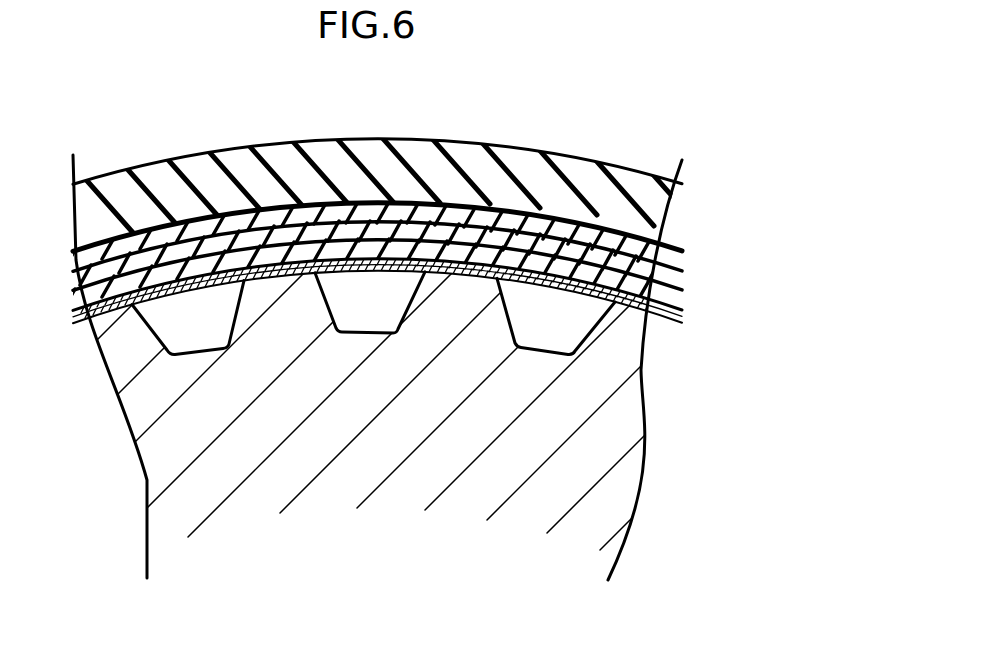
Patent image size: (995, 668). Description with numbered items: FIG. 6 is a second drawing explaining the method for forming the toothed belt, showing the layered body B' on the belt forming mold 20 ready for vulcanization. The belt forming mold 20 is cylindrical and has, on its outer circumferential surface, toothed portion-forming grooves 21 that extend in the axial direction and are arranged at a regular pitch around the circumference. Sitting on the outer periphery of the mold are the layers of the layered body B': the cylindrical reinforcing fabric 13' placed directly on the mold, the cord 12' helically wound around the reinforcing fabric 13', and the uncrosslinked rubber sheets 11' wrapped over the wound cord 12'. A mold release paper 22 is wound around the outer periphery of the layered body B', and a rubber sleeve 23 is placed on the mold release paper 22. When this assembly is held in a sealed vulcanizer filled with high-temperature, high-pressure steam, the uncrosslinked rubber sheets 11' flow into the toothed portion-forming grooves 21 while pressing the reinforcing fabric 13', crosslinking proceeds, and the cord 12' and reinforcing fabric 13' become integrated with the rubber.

The belt forming mold 20 is at (390, 451).
The toothed portion-forming grooves 21 is at (237, 301).
The mold release paper 22 is at (198, 222).
The rubber sleeve 23 is at (374, 170).
The uncrosslinked rubber sheets 11' is at (377, 184).
The cord 12' is at (370, 302).
The reinforcing fabric 13' is at (378, 307).
The layered body B' is at (690, 218).